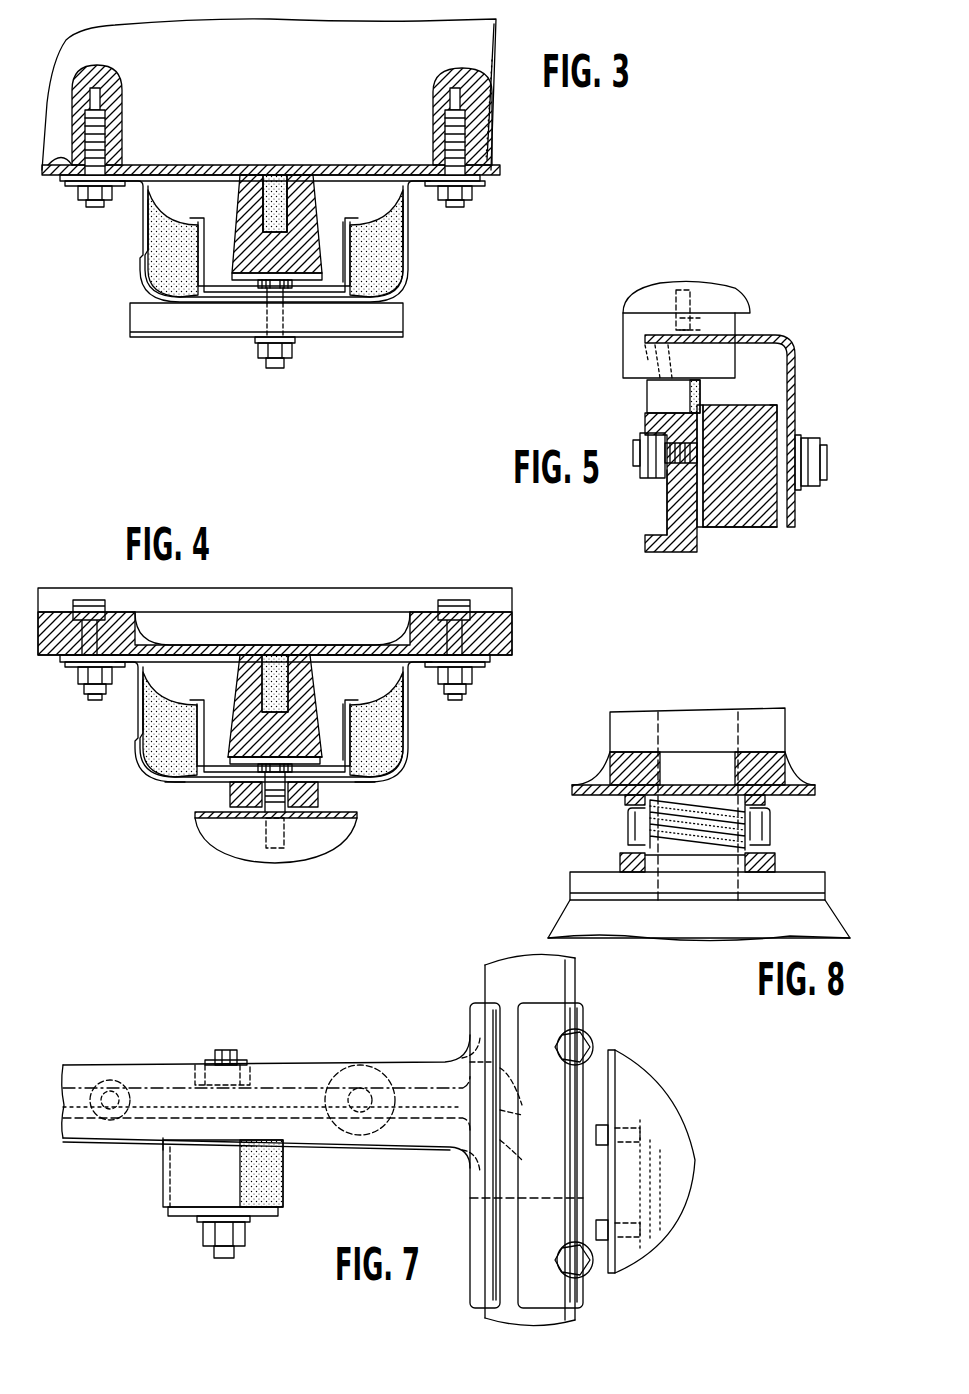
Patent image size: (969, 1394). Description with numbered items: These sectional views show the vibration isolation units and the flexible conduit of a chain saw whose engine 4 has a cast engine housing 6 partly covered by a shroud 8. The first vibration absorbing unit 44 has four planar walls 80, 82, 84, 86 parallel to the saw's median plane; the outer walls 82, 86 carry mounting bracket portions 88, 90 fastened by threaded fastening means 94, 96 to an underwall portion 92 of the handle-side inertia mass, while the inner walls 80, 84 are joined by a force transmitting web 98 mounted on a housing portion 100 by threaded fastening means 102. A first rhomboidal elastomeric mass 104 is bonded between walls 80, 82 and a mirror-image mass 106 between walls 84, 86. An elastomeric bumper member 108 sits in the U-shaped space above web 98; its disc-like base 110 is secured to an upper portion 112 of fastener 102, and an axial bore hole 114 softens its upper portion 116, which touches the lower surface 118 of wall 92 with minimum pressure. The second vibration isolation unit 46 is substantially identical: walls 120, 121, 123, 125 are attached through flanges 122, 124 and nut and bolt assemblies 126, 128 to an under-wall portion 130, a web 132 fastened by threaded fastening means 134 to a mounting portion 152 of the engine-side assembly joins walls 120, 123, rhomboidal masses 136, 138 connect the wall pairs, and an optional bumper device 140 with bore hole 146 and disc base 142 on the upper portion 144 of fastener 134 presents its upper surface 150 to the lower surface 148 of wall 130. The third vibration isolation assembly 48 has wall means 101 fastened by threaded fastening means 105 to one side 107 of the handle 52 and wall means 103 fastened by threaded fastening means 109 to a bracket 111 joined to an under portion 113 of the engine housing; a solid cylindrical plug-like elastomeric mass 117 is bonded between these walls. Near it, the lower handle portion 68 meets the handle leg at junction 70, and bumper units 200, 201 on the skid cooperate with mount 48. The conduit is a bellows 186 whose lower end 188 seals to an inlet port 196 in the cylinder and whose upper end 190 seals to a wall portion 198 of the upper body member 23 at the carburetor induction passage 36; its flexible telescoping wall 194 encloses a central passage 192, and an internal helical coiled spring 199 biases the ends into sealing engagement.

In FIG. 5, the internal combustion engine 4 is at (722, 292).
In FIG. 8, the engine housing 6 is at (618, 923).
In FIG. 7, the shroud 8 is at (645, 1085).
In FIG. 8, the body member 23 is at (775, 738).
In FIG. 8, the induction passage 36 is at (736, 720).
In FIG. 3, the vibration absorbing unit 44 is at (425, 279).
In FIG. 4, the second vibration isolation unit 46 is at (166, 812).
In FIG. 5, the third vibration isolation assembly 48 is at (779, 543).
In FIG. 7, the third vibration isolation assembly 48 is at (296, 1165).
In FIG. 5, the handle 52 is at (665, 500).
In FIG. 7, the handle 52 is at (148, 1063).
In FIG. 7, the lower portion of the handle member 68 is at (578, 980).
In FIG. 7, the junction 70 is at (600, 1055).
In FIG. 3, the first planar wall 80 is at (345, 244).
In FIG. 3, the second planar wall 82 is at (410, 222).
In FIG. 3, the third planar wall 84 is at (210, 224).
In FIG. 3, the fourth planar wall 86 is at (146, 222).
In FIG. 3, the mounting bracket portion 88 is at (486, 183).
In FIG. 3, the mounting bracket portion 90 is at (70, 186).
In FIG. 3, the underwall portion 92 is at (276, 170).
In FIG. 3, the threaded fastening means 94 is at (102, 132).
In FIG. 3, the threaded fastening means 96 is at (448, 130).
In FIG. 3, the force transmitting web 98 is at (262, 300).
In FIG. 3, the housing portion 100 is at (395, 325).
In FIG. 5, the ninth wall means 101 is at (705, 396).
In FIG. 3, the threaded fastening means 102 is at (292, 350).
In FIG. 5, the tenth wall means 103 is at (776, 404).
In FIG. 3, the first rhomboidal elastomeric mass 104 is at (385, 288).
In FIG. 5, the threaded fastening means 105 is at (652, 452).
In FIG. 7, the threaded fastening means 105 is at (228, 1050).
In FIG. 3, the second rhomboidal elastomeric mass 106 is at (152, 270).
In FIG. 5, the side of handle leg 107 is at (680, 515).
In FIG. 7, the side of handle leg 107 is at (140, 1140).
In FIG. 3, the elastomeric bumper member 108 is at (312, 183).
In FIG. 5, the threaded fastening means 109 is at (814, 446).
In FIG. 7, the threaded fastening means 109 is at (248, 1238).
In FIG. 3, the disc-like base 110 is at (245, 290).
In FIG. 5, the bracket 111 is at (798, 375).
In FIG. 7, the bracket 111 is at (276, 1216).
In FIG. 3, the upper portion of threaded fastening member 112 is at (295, 286).
In FIG. 5, the under portion of the housing 113 is at (722, 302).
In FIG. 3, the bore hole 114 is at (288, 180).
In FIG. 3, the upper portion of the bumper member 116 is at (260, 178).
In FIG. 5, the plug-like elastomeric mass 117 is at (735, 522).
In FIG. 7, the plug-like elastomeric mass 117 is at (180, 1165).
In FIG. 3, the lower surface of housing wall 118 is at (180, 178).
In FIG. 4, the fifth wall means 120 is at (340, 704).
In FIG. 4, the sixth wall means 121 is at (406, 720).
In FIG. 4, the flange 122 is at (486, 660).
In FIG. 4, the seventh wall means 123 is at (206, 702).
In FIG. 4, the flange 124 is at (64, 660).
In FIG. 4, the eighth wall means 125 is at (140, 720).
In FIG. 4, the nut and bolt assembly 126 is at (468, 698).
In FIG. 4, the nut and bolt assembly 128 is at (85, 697).
In FIG. 4, the under-wall portion 130 is at (350, 648).
In FIG. 4, the force transmitting web 132 is at (185, 780).
In FIG. 4, the threaded fastening means 134 is at (286, 834).
In FIG. 4, the third rhomboidal mass 136 is at (398, 760).
In FIG. 4, the fourth rhomboidal mass 138 is at (152, 745).
In FIG. 4, the movement limiting bumper device 140 is at (257, 660).
In FIG. 4, the disc-like base portion 142 is at (355, 781).
In FIG. 4, the upper portion of threaded fastening means 144 is at (255, 770).
In FIG. 4, the bore hole 146 is at (286, 662).
In FIG. 4, the lower surface of the wall 148 is at (180, 655).
In FIG. 4, the upper surface of the bumper member 150 is at (272, 644).
In FIG. 4, the frame bracket 152 is at (344, 822).
In FIG. 8, the bellows 186 is at (772, 832).
In FIG. 8, the lower end of the bellows 188 is at (778, 858).
In FIG. 8, the upper end of the bellows 190 is at (758, 785).
In FIG. 8, the central passage 192 is at (768, 812).
In FIG. 8, the flexible telescoping wall 194 is at (630, 825).
In FIG. 8, the inlet port 196 is at (720, 884).
In FIG. 8, the wall portion 198 is at (590, 794).
In FIG. 8, the helical coiled spring 199 is at (708, 800).
In FIG. 5, the bumper unit 200 is at (647, 390).
In FIG. 7, the bumper unit 201 is at (378, 1083).